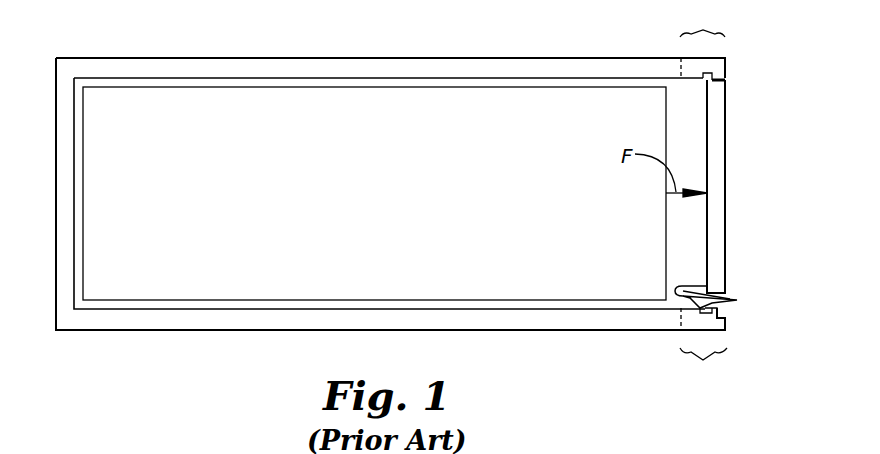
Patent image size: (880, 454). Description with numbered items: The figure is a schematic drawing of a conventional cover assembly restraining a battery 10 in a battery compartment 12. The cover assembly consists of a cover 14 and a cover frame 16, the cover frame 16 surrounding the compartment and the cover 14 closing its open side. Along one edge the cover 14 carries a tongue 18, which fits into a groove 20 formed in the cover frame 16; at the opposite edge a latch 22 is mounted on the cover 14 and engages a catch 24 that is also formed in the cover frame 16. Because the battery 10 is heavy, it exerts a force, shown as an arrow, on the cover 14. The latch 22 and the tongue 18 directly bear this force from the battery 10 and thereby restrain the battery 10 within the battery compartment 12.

The battery 10 is at (178, 288).
The battery compartment 12 is at (75, 313).
The cover 14 is at (720, 156).
The cover frame 16 is at (703, 193).
The tongue 18 is at (712, 81).
The groove 20 is at (705, 72).
The latch 22 is at (722, 298).
The catch 24 is at (712, 313).